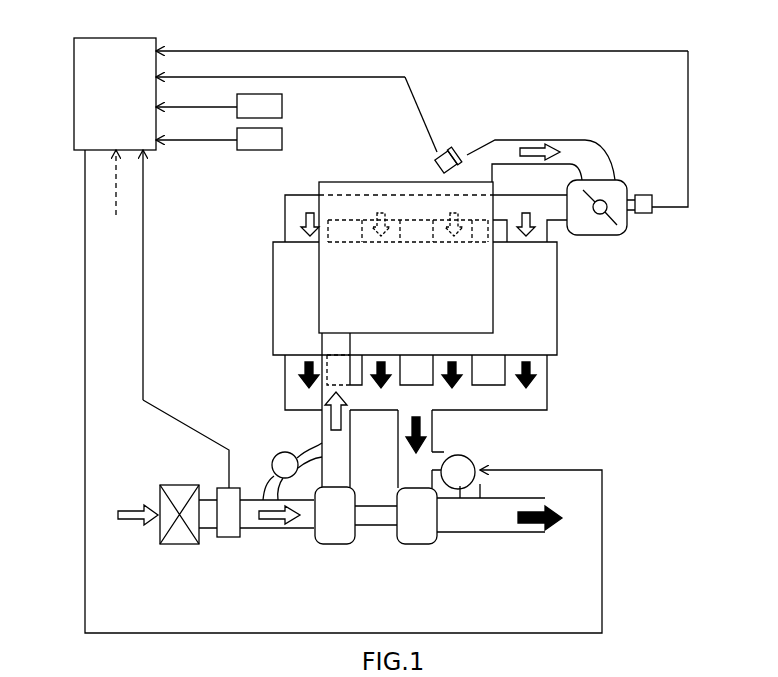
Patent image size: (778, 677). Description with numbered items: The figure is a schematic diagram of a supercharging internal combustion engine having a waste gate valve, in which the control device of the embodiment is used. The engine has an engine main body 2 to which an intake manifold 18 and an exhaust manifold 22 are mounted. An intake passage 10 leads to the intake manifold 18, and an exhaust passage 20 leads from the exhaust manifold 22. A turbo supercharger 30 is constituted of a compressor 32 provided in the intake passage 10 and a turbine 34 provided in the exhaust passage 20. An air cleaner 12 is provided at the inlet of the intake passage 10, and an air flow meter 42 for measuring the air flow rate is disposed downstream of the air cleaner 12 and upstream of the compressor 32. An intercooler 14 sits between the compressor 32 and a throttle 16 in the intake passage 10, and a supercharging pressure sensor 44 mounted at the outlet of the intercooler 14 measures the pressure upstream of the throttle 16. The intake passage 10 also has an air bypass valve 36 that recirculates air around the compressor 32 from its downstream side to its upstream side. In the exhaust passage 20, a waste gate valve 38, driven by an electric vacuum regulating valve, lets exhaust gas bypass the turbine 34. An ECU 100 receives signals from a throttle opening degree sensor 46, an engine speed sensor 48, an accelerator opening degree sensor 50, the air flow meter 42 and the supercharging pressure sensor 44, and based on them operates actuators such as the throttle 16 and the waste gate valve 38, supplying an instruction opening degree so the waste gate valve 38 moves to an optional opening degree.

The ECU 100 is at (115, 38).
The accelerator opening degree sensor 50 is at (282, 108).
The engine speed sensor 48 is at (282, 140).
The supercharging pressure sensor 44 is at (457, 151).
The intake passage 10 is at (322, 392).
The throttle 16 is at (625, 232).
The throttle opening degree sensor 46 is at (642, 195).
The intake manifold 18 is at (285, 218).
The intercooler 14 is at (319, 270).
The engine main body 2 is at (557, 290).
The exhaust manifold 22 is at (547, 378).
The exhaust passage 20 is at (432, 432).
The waste gate valve 38 is at (472, 458).
The compressor 32 is at (332, 545).
The turbine 34 is at (418, 545).
The turbo supercharger 30 is at (368, 553).
The air bypass valve 36 is at (276, 456).
The air flow meter 42 is at (223, 488).
The air cleaner 12 is at (177, 544).